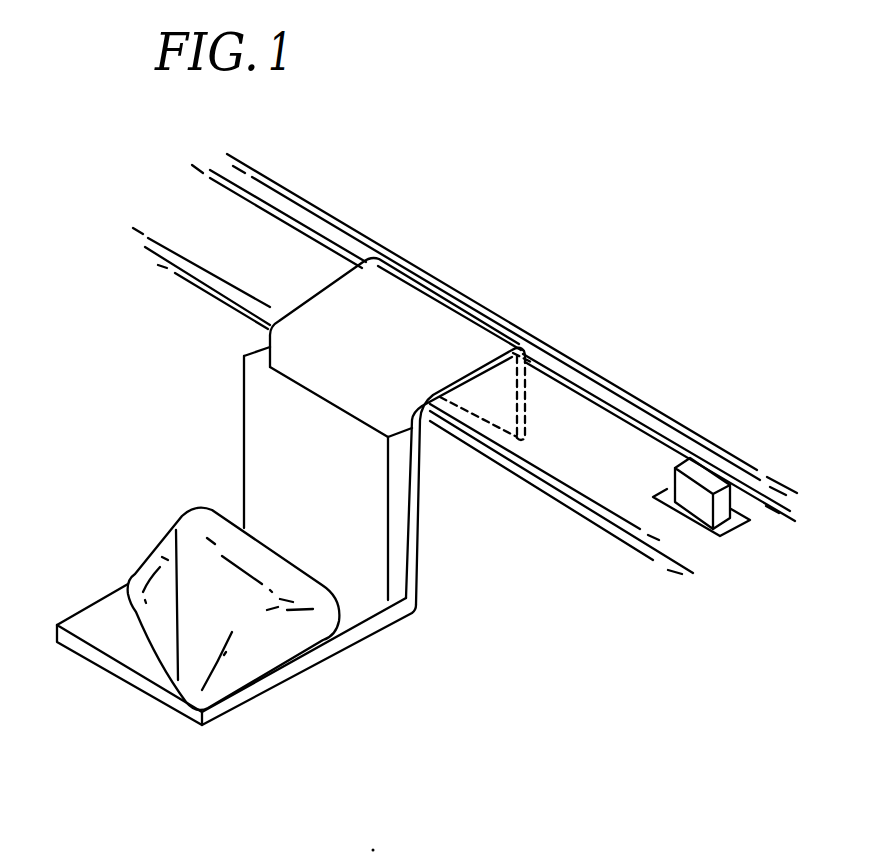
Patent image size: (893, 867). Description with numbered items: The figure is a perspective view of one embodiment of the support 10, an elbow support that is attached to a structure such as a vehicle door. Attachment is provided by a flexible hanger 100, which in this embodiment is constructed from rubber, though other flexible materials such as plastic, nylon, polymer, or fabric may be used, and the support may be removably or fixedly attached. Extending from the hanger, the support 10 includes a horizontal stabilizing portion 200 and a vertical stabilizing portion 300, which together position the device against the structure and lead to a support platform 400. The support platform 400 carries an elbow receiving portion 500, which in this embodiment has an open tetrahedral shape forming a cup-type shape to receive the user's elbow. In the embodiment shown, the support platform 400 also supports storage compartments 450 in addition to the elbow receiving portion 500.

The support 10 is at (212, 451).
The flexible hanger 100 is at (523, 392).
The horizontal stabilizing portion 200 is at (394, 296).
The vertical stabilizing portion 300 is at (422, 497).
The support platform 400 is at (350, 648).
The storage compartments 450 is at (272, 401).
The elbow receiving portion 500 is at (158, 568).